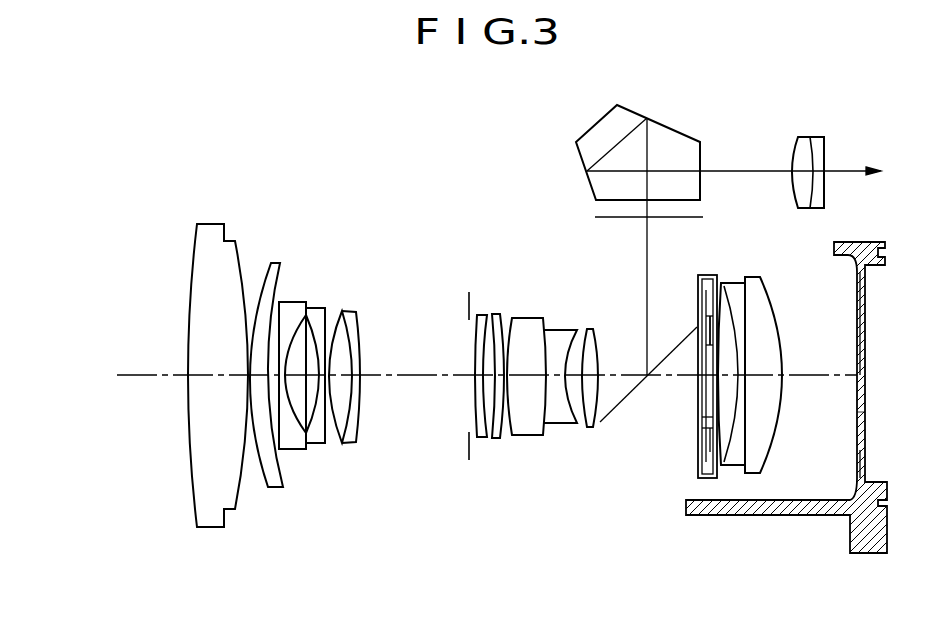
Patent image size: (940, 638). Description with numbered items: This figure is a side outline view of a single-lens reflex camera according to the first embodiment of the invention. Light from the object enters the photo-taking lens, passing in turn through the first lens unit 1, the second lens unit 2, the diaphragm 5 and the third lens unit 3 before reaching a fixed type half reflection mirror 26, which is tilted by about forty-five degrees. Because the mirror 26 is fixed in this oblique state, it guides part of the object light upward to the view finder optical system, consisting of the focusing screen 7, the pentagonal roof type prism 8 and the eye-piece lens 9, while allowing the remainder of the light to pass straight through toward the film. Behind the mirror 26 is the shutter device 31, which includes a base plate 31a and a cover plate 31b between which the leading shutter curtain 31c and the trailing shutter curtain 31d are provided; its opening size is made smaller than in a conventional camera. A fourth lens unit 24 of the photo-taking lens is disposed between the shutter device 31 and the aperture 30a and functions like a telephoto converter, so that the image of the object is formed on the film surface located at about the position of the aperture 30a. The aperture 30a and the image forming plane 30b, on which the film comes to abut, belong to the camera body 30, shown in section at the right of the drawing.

The first lens unit 1 is at (195, 549).
The second lens unit 2 is at (362, 549).
The third lens unit 3 is at (476, 549).
The diaphragm 5 is at (469, 460).
The focusing screen 7 is at (612, 218).
The pentagonal roof type prism 8 is at (592, 133).
The eye-piece lens 9 is at (785, 126).
The fourth lens unit 24 is at (712, 549).
The fixed type half reflection mirror 26 is at (627, 397).
The camera body 30 is at (729, 409).
The aperture 30a is at (866, 313).
The image forming plane 30b is at (866, 403).
The shutter device 31 is at (730, 432).
The base plate 31a is at (703, 473).
The cover plate 31b is at (713, 478).
The leading shutter curtain 31c is at (707, 417).
The trailing shutter curtain 31d is at (710, 343).